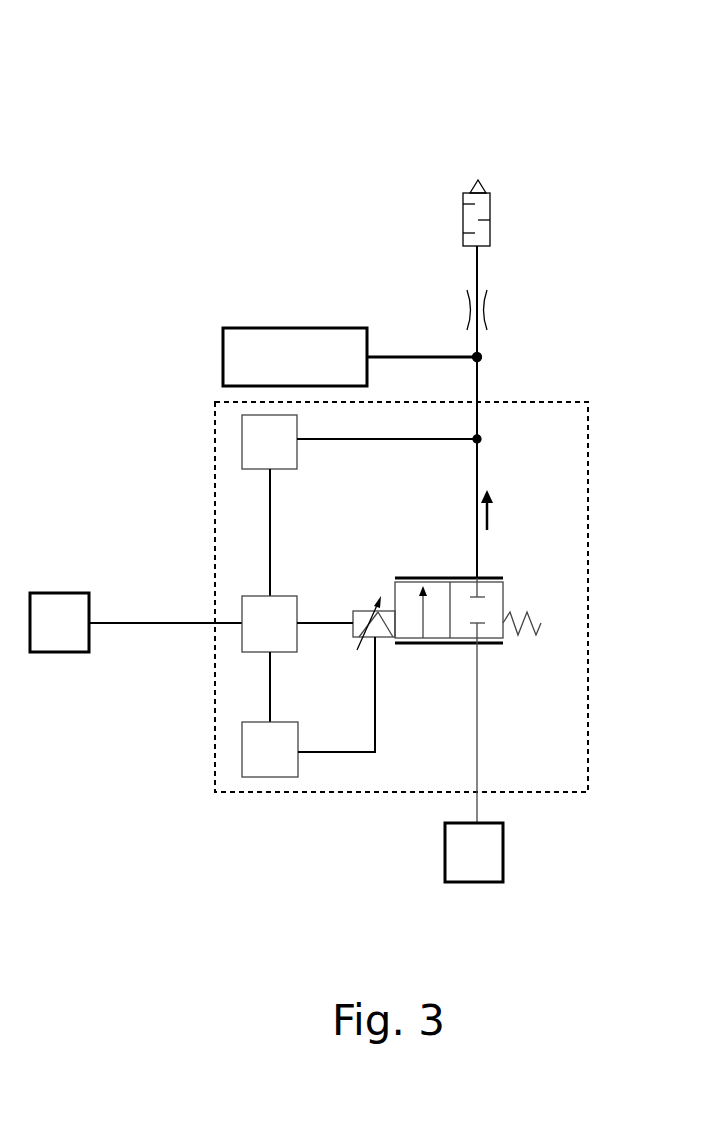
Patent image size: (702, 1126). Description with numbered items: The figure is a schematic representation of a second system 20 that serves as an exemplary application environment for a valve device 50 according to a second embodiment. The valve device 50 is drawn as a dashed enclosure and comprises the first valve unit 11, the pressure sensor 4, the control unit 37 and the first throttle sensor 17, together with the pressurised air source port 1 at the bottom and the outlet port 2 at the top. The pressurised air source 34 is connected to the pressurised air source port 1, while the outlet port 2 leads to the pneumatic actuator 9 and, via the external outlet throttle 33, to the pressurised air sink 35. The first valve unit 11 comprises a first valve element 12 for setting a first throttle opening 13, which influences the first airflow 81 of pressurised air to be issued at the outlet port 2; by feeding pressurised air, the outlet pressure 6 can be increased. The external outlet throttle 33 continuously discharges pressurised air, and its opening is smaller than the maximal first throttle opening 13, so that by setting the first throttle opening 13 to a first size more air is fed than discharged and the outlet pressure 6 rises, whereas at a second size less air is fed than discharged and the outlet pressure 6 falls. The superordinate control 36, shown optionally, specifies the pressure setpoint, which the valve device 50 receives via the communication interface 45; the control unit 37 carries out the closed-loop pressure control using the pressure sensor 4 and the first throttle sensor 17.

The system 20 is at (170, 108).
The valve device 50 is at (401, 585).
The pressurised air sink 35 is at (495, 213).
The outlet port 2 is at (486, 412).
The external outlet throttle 33 is at (458, 317).
The pneumatic actuator 9 is at (352, 357).
The pressure sensor 4 is at (269, 505).
The outlet pressure 6 is at (401, 441).
The first airflow 81 is at (499, 510).
The first valve unit 11 is at (446, 668).
The first valve element 12 is at (447, 597).
The first throttle opening 13 is at (460, 567).
The superordinate control 36 is at (59, 622).
The communication interface 45 is at (165, 613).
The control unit 37 is at (297, 659).
The first throttle sensor 17 is at (308, 707).
The pressurised air source port 1 is at (486, 733).
The pressurised air source 34 is at (474, 852).